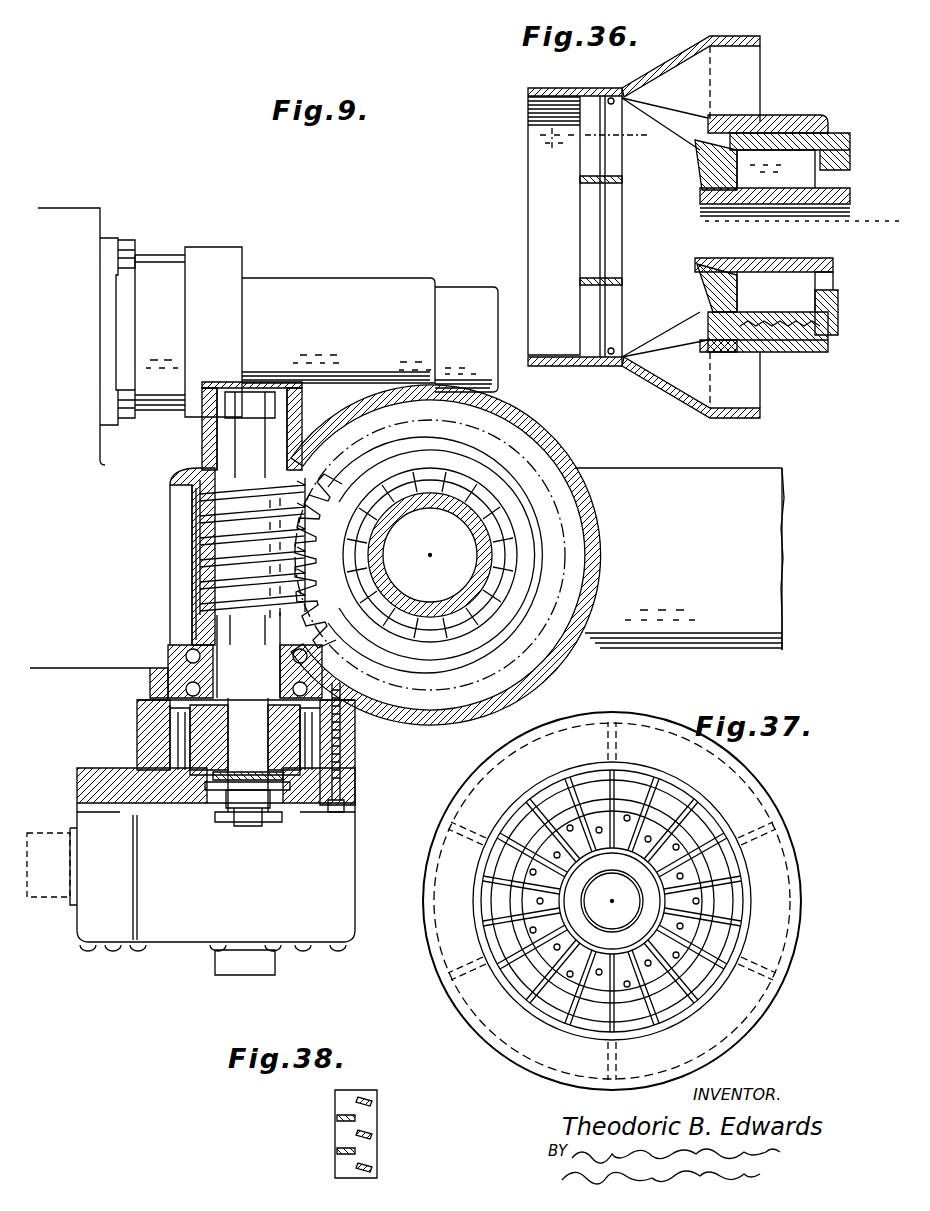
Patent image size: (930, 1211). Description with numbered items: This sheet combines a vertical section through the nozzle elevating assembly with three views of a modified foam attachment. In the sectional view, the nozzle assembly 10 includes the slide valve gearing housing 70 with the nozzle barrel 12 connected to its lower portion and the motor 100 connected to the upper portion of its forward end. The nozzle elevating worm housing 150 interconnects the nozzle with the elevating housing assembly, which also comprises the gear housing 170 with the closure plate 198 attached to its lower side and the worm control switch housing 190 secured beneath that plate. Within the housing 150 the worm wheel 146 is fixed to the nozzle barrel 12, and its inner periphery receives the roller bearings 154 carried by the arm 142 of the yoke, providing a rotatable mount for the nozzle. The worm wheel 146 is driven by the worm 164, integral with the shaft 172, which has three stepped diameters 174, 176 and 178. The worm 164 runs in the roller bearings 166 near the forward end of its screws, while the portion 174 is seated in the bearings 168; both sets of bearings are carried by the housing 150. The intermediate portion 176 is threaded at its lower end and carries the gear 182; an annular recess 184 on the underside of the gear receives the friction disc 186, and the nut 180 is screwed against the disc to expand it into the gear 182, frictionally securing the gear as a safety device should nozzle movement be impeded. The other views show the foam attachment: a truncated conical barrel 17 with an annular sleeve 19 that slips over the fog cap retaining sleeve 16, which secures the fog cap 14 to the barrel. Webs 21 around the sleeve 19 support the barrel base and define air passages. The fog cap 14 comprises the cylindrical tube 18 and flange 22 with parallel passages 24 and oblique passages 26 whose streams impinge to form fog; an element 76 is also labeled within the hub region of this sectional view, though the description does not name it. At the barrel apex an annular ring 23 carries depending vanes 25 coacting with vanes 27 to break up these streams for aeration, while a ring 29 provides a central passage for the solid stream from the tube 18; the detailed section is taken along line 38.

In FIG. 9, the nozzle assembly 10 is at (682, 468).
In FIG. 9, the nozzle barrel 12 is at (738, 466).
In FIG. 36, the nozzle barrel 12 is at (835, 336).
In FIG. 36, the fog cap 14 is at (685, 268).
In FIG. 37, the fog cap 14 is at (665, 868).
In FIG. 36, the annular retaining sleeve 16 is at (808, 122).
In FIG. 37, the annular retaining sleeve 16 is at (700, 886).
In FIG. 36, the truncated conical barrel 17 is at (770, 92).
In FIG. 37, the truncated conical barrel 17 is at (785, 798).
In FIG. 36, the cylindrical tube 18 is at (808, 206).
In FIG. 36, the annular sleeve 19 is at (790, 107).
In FIG. 37, the annular sleeve 19 is at (710, 904).
In FIG. 36, the webs 21 is at (752, 60).
In FIG. 37, the webs 21 is at (622, 752).
In FIG. 36, the flange 22 is at (720, 352).
In FIG. 36, the annular ring 23 is at (610, 96).
In FIG. 37, the annular ring 23 is at (695, 813).
In FIG. 38, the annular ring 23 is at (338, 1170).
In FIG. 36, the passages 24 is at (700, 165).
In FIG. 37, the passages 24 is at (600, 835).
In FIG. 36, the depending vanes 25 is at (604, 100).
In FIG. 38, the depending vanes 25 is at (342, 1150).
In FIG. 36, the passages 26 is at (700, 190).
In FIG. 37, the passages 26 is at (668, 978).
In FIG. 36, the vanes 27 is at (600, 302).
In FIG. 38, the vanes 27 is at (368, 1168).
In FIG. 36, the ring 29 is at (600, 232).
In FIG. 37, the ring 29 is at (498, 912).
In FIG. 36, the section line 38— 38 is at (552, 140).
In FIG. 9, the slide valve gearing housing 70 is at (110, 242).
In FIG. 36, the bearing sleeve 76 is at (768, 258).
In FIG. 9, the motor 100 is at (316, 332).
In FIG. 9, the arm 142 is at (488, 555).
In FIG. 9, the worm wheel 146 is at (332, 444).
In FIG. 9, the nozzle elevating worm housing 150 is at (166, 553).
In FIG. 9, the roller bearings 154 is at (490, 478).
In FIG. 9, the worm 164 is at (212, 521).
In FIG. 9, the roller bearings 166 is at (215, 442).
In FIG. 9, the bearings 168 is at (188, 688).
In FIG. 9, the gear housing 170 is at (134, 722).
In FIG. 9, the shaft 172 is at (212, 630).
In FIG. 9, the shaft portion 174 is at (176, 662).
In FIG. 9, the intermediate shaft portion 176 is at (344, 741).
In FIG. 9, the shaft portion 178 is at (247, 826).
In FIG. 9, the nut 180 is at (280, 822).
In FIG. 9, the gear 182 is at (300, 767).
In FIG. 9, the annular recess 184 is at (205, 770).
In FIG. 9, the friction disc 186 is at (310, 793).
In FIG. 9, the worm control switch housing 190 is at (188, 952).
In FIG. 9, the closure plate 198 is at (100, 770).